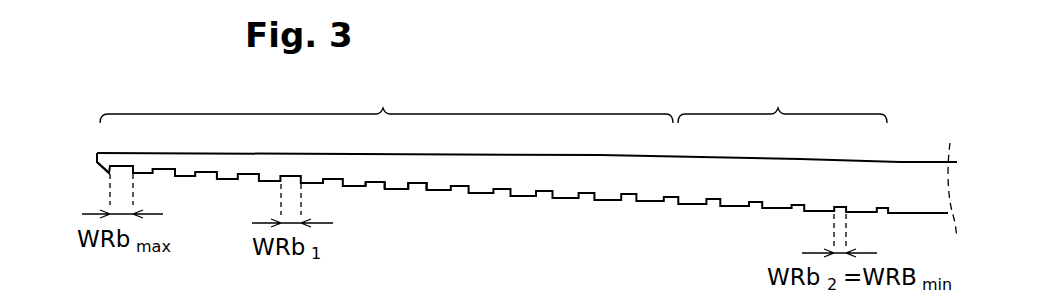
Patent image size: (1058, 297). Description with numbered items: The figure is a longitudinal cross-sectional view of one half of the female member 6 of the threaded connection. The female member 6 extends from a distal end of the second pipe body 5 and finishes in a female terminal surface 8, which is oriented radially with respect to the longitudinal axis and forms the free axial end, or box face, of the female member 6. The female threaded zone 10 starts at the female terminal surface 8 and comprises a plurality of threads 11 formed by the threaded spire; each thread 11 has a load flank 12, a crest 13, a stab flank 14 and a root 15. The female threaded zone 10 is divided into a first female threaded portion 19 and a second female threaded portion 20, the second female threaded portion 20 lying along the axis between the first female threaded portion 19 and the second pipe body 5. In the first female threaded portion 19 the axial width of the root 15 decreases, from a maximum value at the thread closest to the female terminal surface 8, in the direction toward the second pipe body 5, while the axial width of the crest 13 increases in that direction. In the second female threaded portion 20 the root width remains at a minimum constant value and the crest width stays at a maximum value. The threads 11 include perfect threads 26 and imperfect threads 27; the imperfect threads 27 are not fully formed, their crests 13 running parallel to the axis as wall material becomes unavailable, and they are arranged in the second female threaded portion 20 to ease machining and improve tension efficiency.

The second pipe body 5 is at (932, 180).
The female member 6 is at (530, 165).
The female terminal surface 8 is at (97, 160).
The female threaded zone 10 is at (607, 202).
The thread 11 is at (392, 180).
The load flank 12 is at (410, 185).
The crest 13 is at (395, 192).
The stab flank 14 is at (380, 188).
The root 15 is at (372, 188).
The first female threaded portion 19 is at (386, 103).
The second female threaded portion 20 is at (782, 103).
The perfect thread 26 is at (482, 197).
The imperfect thread 27 is at (866, 214).